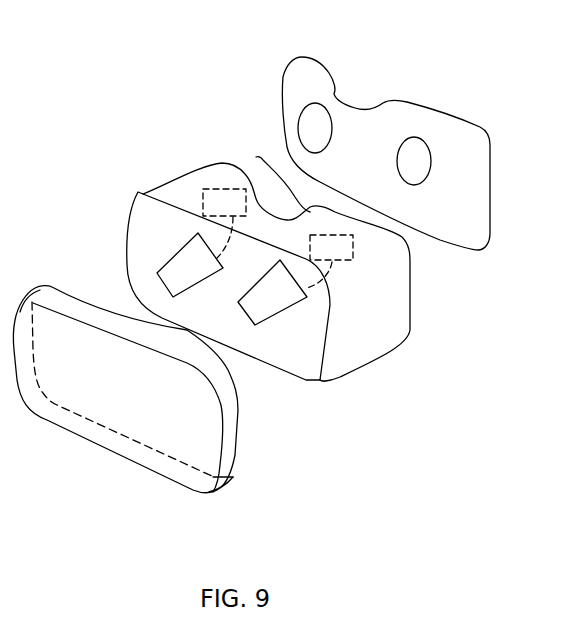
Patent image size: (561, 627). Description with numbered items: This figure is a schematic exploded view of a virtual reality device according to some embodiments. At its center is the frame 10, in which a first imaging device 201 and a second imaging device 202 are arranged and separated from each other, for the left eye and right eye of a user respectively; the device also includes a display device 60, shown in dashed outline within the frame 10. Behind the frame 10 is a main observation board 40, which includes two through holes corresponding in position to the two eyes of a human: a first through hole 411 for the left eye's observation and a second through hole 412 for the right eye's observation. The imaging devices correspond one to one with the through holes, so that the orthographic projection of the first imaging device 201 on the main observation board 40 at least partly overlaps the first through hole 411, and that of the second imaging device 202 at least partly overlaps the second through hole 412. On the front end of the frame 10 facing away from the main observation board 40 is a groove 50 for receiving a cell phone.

The frame 10 is at (177, 197).
The main observation board 40 is at (365, 134).
The groove 50 is at (80, 312).
The display device 60 is at (222, 192).
The first imaging device 201 is at (267, 305).
The second imaging device 202 is at (190, 257).
The first through hole 411 is at (408, 153).
The second through hole 412 is at (315, 122).